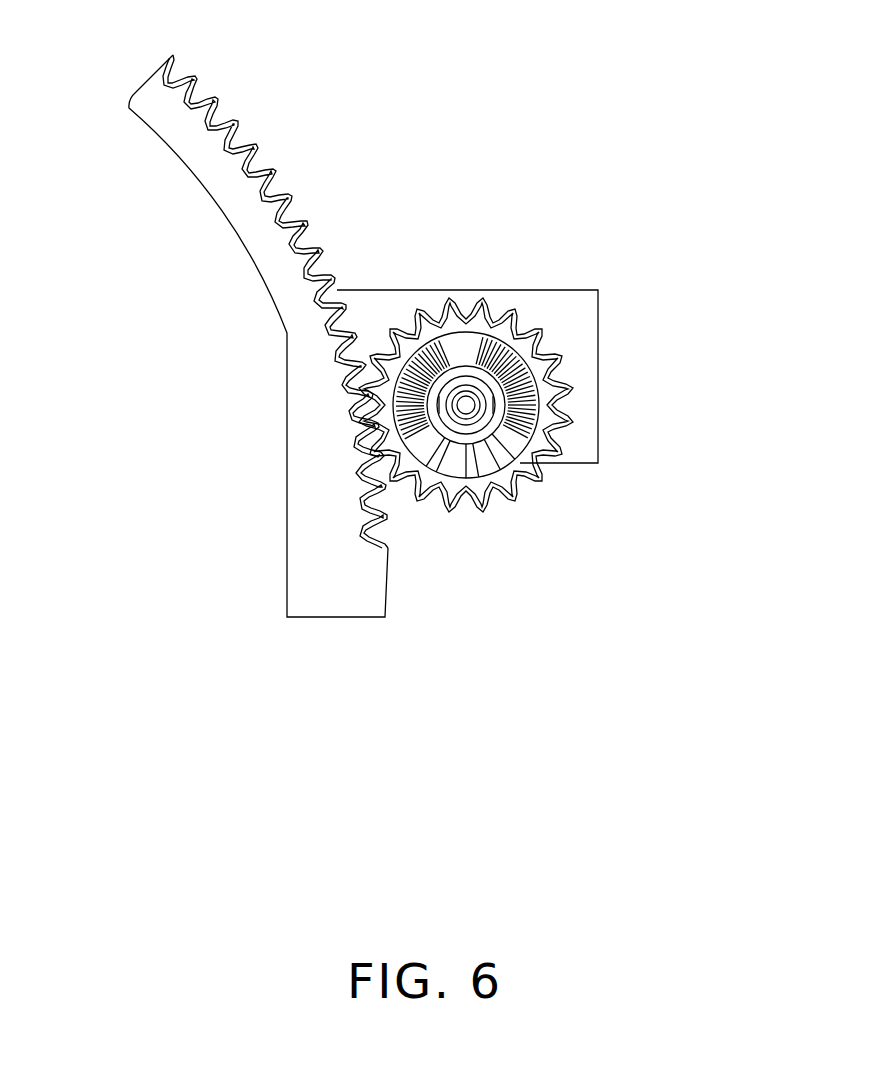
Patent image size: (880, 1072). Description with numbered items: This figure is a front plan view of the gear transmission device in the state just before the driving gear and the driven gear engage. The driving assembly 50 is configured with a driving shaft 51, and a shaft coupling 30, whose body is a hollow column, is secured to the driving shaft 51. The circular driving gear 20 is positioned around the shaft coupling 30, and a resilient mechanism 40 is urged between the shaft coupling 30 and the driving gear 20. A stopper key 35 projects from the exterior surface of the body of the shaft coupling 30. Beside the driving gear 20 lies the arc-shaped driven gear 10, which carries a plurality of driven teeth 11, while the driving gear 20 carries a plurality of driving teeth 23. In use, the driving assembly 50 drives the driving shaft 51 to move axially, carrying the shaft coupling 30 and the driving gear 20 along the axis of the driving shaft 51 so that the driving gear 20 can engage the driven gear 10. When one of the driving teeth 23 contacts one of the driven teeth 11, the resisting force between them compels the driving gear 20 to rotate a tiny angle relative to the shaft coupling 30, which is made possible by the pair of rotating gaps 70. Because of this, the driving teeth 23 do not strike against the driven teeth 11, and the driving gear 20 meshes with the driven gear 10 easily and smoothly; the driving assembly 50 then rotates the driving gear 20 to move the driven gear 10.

The driven gear 10 is at (158, 73).
The driven teeth 11 is at (243, 137).
The driving gear 20 is at (452, 307).
The driving teeth 23 is at (490, 307).
The shaft coupling 30 is at (495, 408).
The stopper key 35 is at (483, 507).
The resilient mechanism 40 is at (543, 380).
The driving assembly 50 is at (582, 288).
The driving shaft 51 is at (540, 335).
The rotating gaps 70 is at (512, 463).